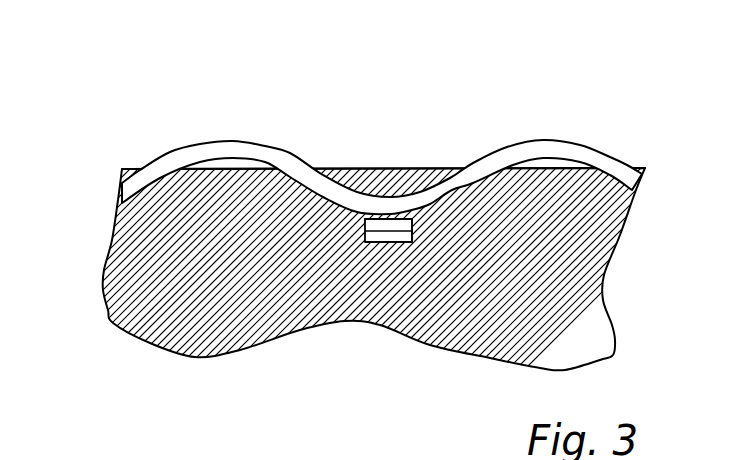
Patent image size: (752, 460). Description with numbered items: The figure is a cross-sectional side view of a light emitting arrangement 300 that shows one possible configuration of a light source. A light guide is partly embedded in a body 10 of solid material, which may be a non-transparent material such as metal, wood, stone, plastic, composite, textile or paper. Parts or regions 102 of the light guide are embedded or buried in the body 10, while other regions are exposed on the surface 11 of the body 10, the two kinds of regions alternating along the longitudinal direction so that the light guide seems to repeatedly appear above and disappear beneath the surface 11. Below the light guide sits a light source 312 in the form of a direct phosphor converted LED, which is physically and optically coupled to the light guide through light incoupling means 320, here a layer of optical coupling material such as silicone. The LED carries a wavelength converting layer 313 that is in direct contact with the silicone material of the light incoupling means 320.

The assembly 300 is at (364, 237).
The body 10 is at (195, 282).
The surface of the body 11 is at (410, 168).
The embedded parts or regions of the light guide 102 is at (305, 172).
The light source 312 is at (385, 242).
The light incoupling means 320 is at (392, 213).
The wavelength converting layer 313 is at (412, 224).